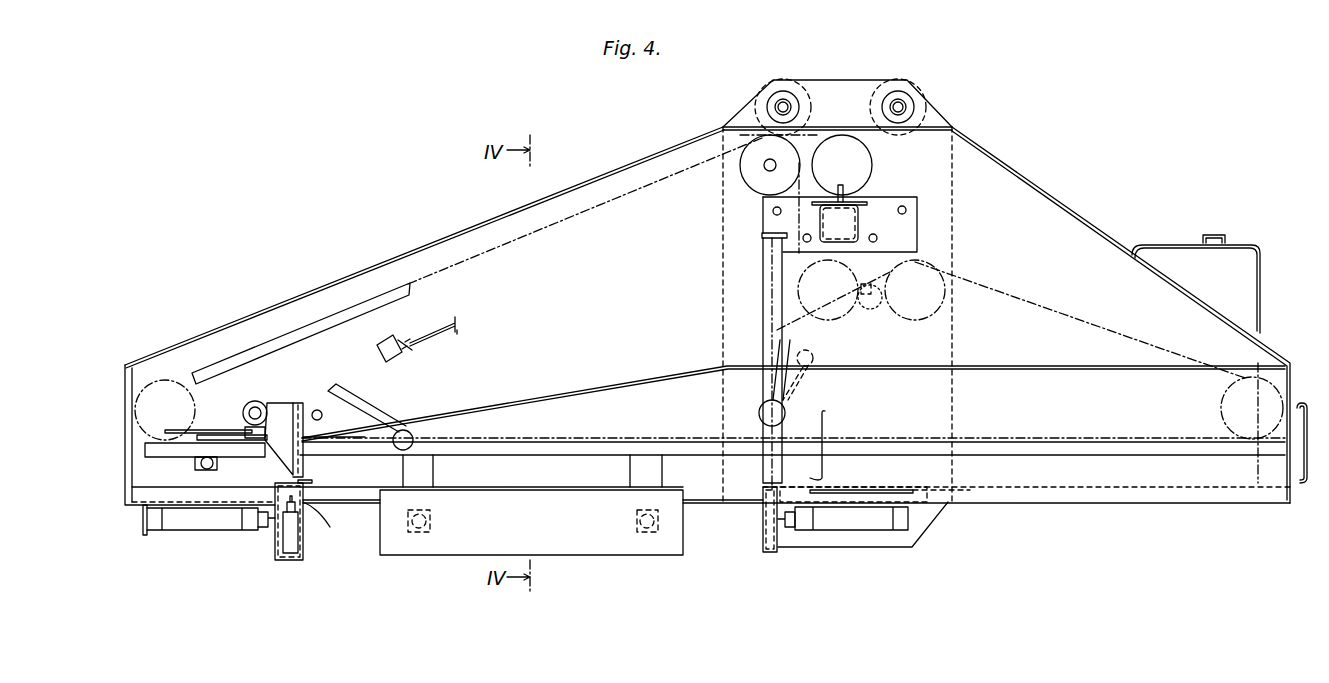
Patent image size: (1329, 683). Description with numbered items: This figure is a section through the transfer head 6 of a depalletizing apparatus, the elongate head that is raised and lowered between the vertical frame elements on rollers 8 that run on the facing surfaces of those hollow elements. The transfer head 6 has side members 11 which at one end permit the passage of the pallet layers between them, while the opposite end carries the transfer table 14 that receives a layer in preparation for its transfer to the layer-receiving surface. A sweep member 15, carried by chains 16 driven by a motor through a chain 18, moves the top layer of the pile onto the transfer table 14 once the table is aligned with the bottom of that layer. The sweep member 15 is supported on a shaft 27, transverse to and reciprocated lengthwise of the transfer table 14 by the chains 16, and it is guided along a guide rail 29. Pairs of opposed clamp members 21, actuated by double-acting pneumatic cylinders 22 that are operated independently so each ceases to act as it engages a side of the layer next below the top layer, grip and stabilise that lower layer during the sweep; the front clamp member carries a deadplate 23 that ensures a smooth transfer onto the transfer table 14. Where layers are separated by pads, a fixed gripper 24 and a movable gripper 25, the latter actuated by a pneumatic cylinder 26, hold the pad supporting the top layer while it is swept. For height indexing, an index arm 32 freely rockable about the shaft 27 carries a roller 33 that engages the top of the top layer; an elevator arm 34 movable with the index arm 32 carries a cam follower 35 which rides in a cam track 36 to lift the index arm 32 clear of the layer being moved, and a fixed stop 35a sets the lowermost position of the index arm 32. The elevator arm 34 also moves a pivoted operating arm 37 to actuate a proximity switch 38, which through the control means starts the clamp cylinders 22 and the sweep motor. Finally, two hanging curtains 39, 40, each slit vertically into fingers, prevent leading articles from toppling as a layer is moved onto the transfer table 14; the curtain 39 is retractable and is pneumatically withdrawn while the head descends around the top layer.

The transfer head 6 is at (1028, 177).
The rollers 8 is at (788, 82).
The side members 11 is at (985, 163).
The transfer table 14 is at (1072, 490).
The sweep member 15 is at (317, 455).
The chains 16 is at (590, 207).
The chain 18 is at (817, 137).
The clamp members 21 is at (307, 540).
The pneumatic cylinders 22 is at (187, 525).
The deadplate 23 is at (848, 487).
The fixed gripper 24 is at (312, 482).
The movable gripper 25 is at (330, 527).
The pneumatic cylinder 26 is at (290, 538).
The shaft 27 is at (262, 404).
The guide rail 29 is at (245, 432).
The index arm 32 is at (820, 323).
The roller 33 is at (883, 317).
The elevator arm 34 is at (788, 388).
The cam follower 35 is at (818, 373).
The fixed stop 35a is at (318, 410).
The cam track 36 is at (572, 392).
The operating arm 37 is at (377, 387).
The proximity switch 38 is at (393, 345).
The hanging curtain 39 is at (768, 297).
The hanging curtain 40 is at (1258, 347).